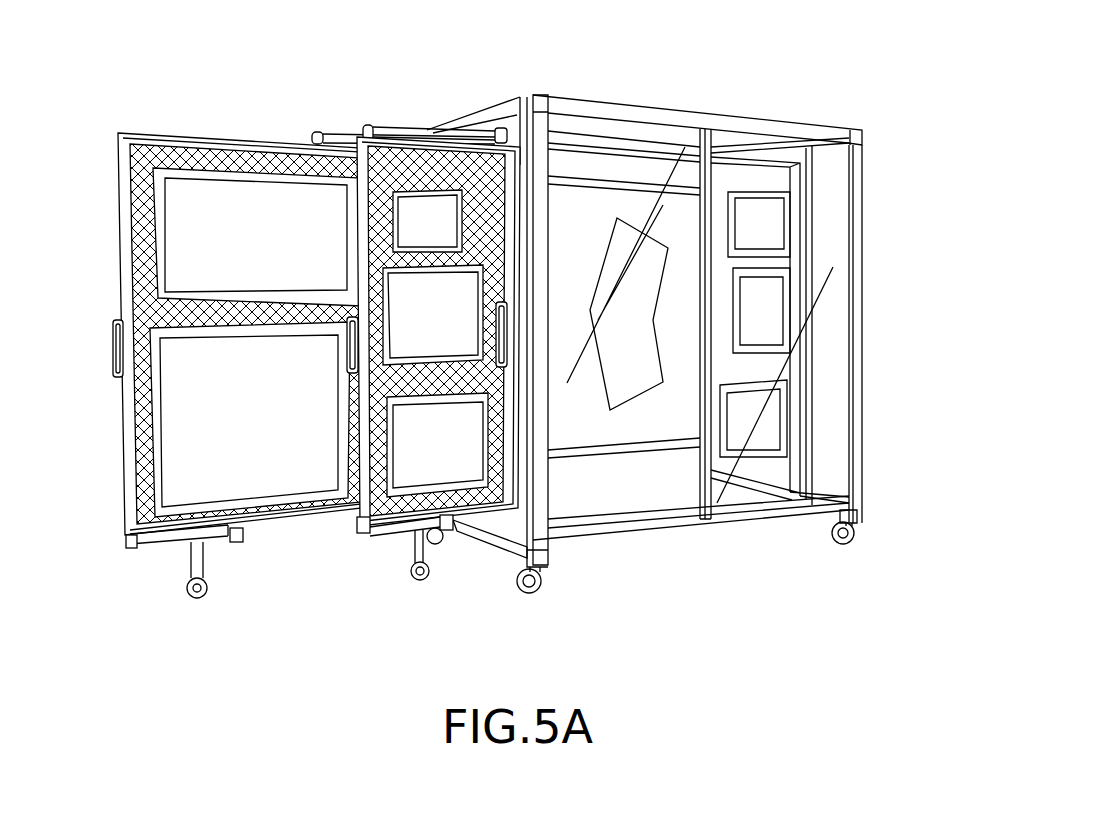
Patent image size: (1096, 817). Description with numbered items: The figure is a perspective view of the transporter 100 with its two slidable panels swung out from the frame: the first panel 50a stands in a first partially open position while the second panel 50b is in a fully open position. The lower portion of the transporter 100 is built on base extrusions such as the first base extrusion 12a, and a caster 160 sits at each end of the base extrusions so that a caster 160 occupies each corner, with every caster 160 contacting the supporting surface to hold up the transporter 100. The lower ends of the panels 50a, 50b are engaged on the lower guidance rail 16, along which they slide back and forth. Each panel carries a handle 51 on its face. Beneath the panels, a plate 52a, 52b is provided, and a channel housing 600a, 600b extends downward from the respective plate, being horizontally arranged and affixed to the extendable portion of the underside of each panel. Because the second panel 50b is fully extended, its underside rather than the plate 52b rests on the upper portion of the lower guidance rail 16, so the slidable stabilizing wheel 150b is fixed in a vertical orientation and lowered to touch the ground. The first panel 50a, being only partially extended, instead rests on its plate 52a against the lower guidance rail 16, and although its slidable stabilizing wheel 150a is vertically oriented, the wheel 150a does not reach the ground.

The transporter 100 is at (632, 86).
The first base extrusion 12a is at (683, 533).
The lower guidance rail 16 is at (497, 553).
The caster 160 is at (542, 590).
The first panel 50a is at (358, 172).
The second panel 50b is at (121, 198).
The door handle 51 is at (113, 350).
The plate 52a is at (453, 533).
The plate 52b is at (238, 544).
The channel housing 600a is at (375, 536).
The channel housing 600b is at (150, 545).
The slidable stabilizing wheel 150a is at (418, 592).
The slidable stabilizing wheel 150b is at (196, 600).